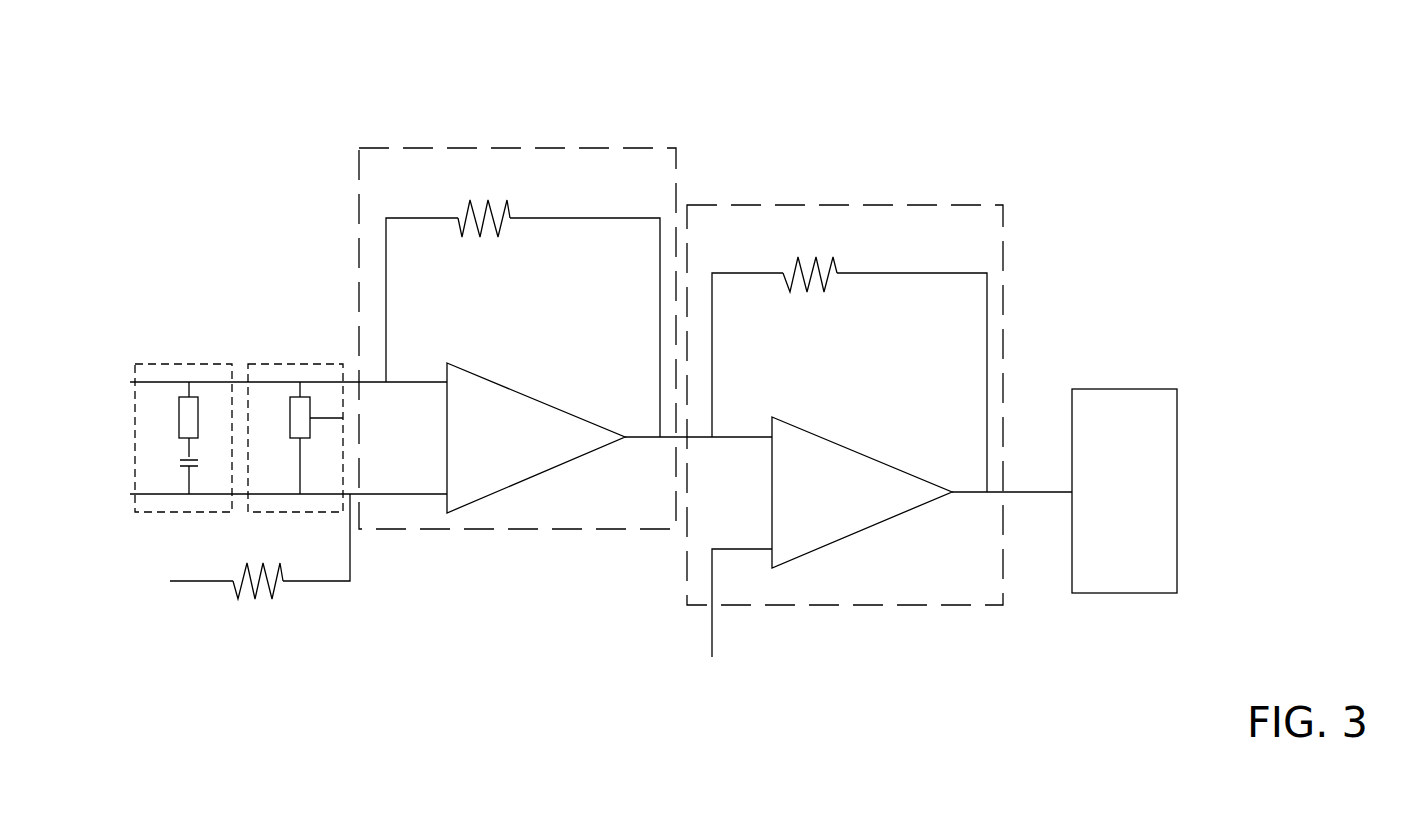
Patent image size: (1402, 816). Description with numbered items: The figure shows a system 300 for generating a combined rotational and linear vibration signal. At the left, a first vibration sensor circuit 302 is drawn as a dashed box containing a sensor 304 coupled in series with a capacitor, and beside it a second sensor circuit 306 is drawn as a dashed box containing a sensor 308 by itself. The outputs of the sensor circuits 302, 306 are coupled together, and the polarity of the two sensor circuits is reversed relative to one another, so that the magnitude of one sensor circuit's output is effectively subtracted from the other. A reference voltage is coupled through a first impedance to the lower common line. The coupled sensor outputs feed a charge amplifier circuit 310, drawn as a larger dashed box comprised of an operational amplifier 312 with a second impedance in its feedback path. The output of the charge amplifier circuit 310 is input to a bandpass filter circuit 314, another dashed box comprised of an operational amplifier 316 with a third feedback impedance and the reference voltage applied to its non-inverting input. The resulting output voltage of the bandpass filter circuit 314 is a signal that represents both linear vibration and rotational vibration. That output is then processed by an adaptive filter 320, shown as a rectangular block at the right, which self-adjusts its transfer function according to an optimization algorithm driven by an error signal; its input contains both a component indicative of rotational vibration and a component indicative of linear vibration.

The system 300 is at (788, 66).
The first vibration sensor circuit 302 is at (208, 363).
The sensor 304 is at (198, 417).
The second sensor circuit 306 is at (317, 363).
The sensor 308 is at (343, 418).
The charge amplifier circuit 310 is at (548, 147).
The operational amplifier 312 is at (540, 398).
The bandpass filter circuit 314 is at (908, 204).
The operational amplifier 316 is at (890, 465).
The adaptive filter 320 is at (1123, 388).